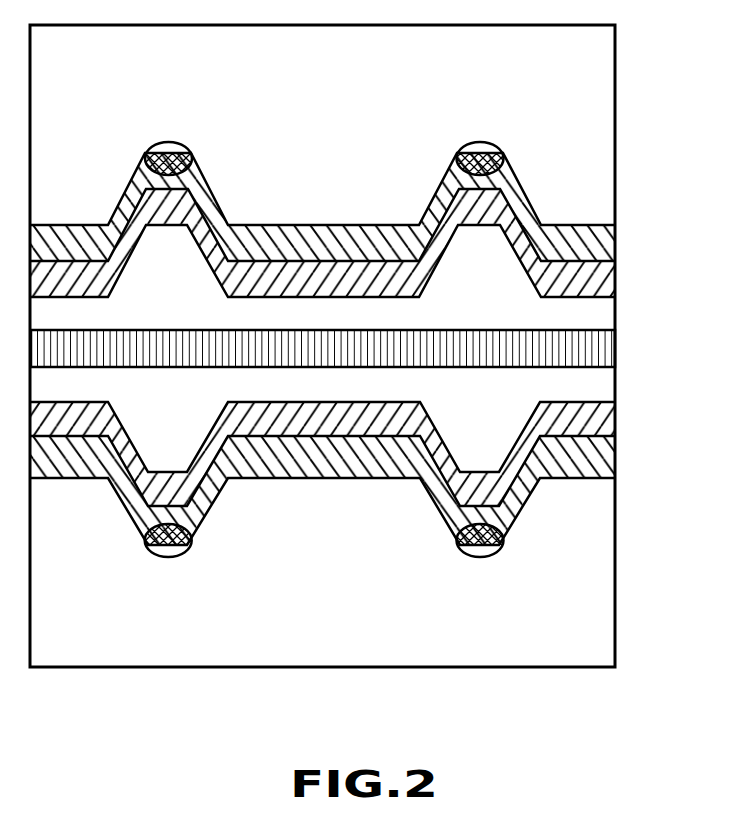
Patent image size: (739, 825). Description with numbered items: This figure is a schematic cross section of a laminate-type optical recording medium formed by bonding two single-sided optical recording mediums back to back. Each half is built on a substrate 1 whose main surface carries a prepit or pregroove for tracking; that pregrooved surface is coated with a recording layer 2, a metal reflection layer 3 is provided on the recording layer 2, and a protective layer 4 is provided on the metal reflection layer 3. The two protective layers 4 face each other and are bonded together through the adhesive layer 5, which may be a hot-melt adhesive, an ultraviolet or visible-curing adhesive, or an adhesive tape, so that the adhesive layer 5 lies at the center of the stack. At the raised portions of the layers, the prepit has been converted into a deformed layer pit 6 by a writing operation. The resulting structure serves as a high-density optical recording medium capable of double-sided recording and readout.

The substrate 1 is at (600, 137).
The recording layer 2 is at (613, 237).
The metal reflection layer 3 is at (603, 280).
The protective layer 4 is at (598, 313).
The adhesive layer 5 is at (617, 338).
The deformed layer pit 6 is at (488, 141).